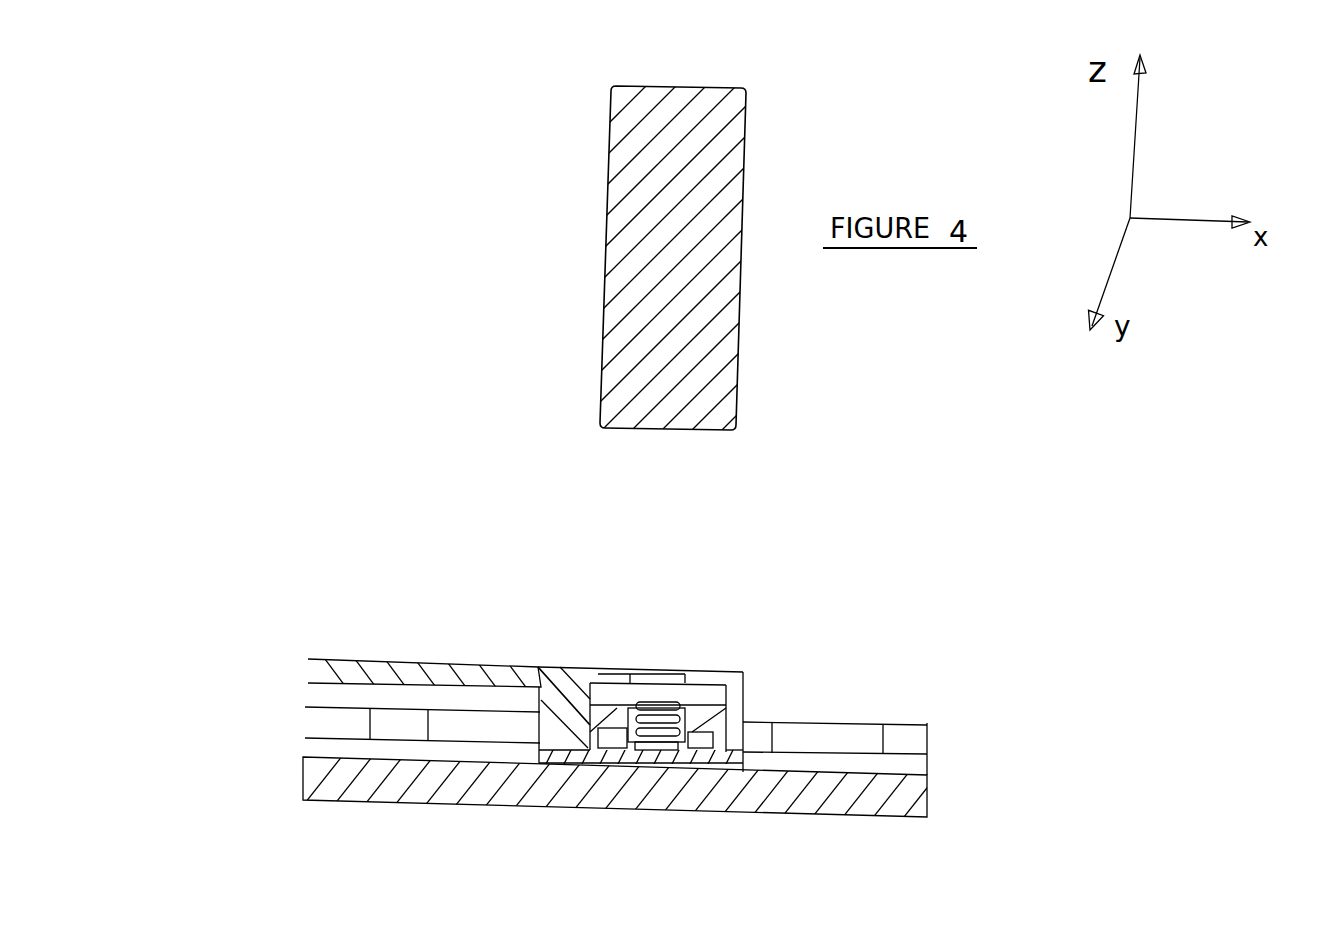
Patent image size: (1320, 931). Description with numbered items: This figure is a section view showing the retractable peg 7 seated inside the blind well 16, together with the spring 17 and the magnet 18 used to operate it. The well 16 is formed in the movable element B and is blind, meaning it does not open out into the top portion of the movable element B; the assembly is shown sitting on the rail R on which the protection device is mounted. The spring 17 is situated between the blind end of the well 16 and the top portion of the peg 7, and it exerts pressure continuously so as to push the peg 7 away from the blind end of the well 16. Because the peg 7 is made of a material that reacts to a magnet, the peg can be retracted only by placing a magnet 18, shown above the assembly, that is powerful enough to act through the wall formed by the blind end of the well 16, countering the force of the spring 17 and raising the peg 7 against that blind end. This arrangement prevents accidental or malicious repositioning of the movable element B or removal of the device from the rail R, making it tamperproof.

The magnet 18 is at (635, 292).
The movable element B is at (403, 668).
The base rail R is at (362, 780).
The blind well 16 is at (590, 700).
The spring 17 is at (673, 708).
The peg 7 is at (700, 737).